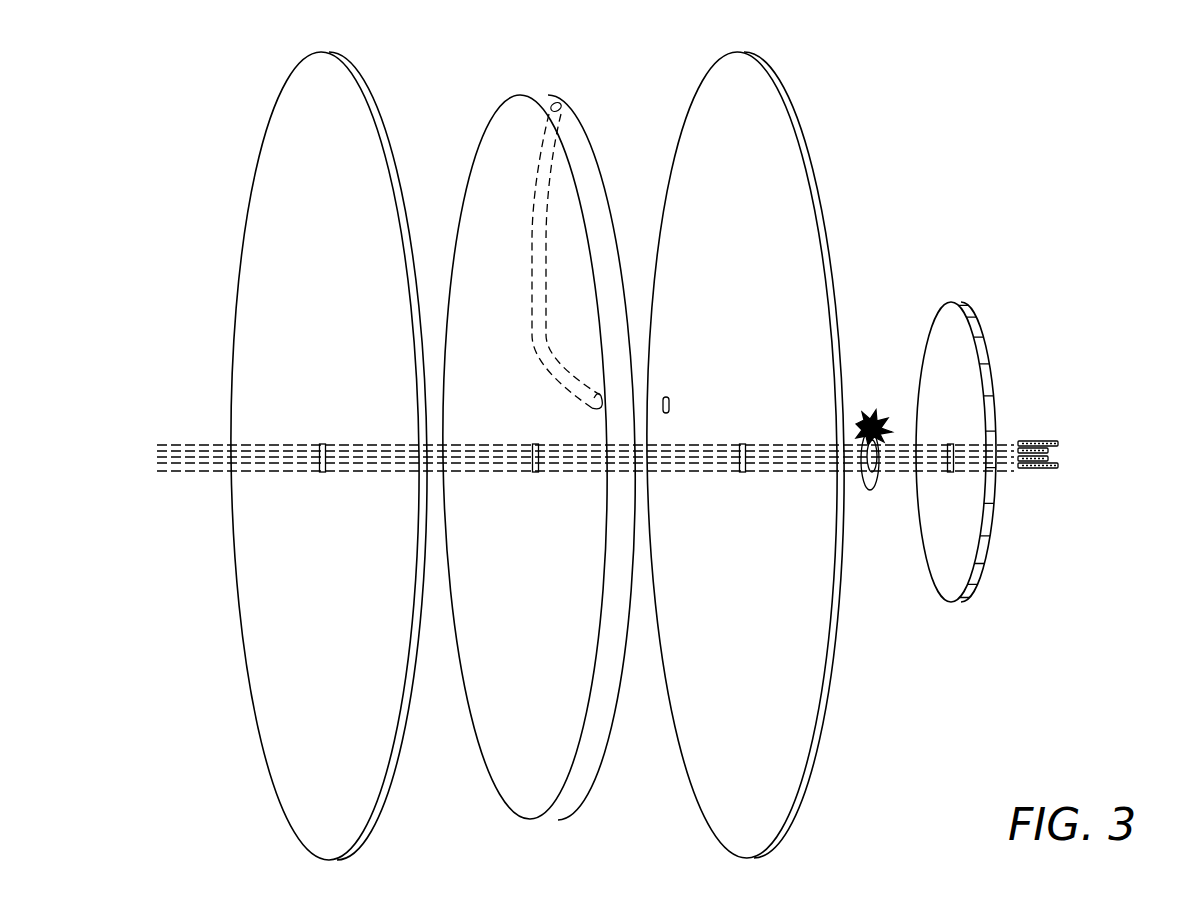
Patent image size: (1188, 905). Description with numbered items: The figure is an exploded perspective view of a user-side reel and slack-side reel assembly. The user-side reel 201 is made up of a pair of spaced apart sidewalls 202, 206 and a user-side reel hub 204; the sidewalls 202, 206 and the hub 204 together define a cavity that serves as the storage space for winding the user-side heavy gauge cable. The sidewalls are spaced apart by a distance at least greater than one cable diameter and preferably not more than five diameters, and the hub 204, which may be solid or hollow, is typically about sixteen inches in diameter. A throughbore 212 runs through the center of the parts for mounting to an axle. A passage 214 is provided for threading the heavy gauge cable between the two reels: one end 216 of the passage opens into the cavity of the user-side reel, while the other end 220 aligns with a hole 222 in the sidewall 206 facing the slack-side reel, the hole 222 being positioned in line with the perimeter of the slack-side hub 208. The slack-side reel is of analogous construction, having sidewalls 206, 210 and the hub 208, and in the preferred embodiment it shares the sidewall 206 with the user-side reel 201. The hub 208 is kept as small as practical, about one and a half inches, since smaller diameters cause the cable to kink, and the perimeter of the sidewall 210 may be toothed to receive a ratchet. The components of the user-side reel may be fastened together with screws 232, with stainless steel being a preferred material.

The user-side reel 201 is at (547, 64).
The sidewall 202 is at (322, 54).
The user-side reel hub 204 is at (518, 97).
The sidewall 206 is at (748, 53).
The hub 208 is at (871, 424).
The sidewall 210 is at (996, 312).
The throughbore 212 is at (323, 472).
The passage 214 is at (503, 225).
The end of the passage 216 is at (560, 104).
The other end of the passage 220 is at (598, 412).
The hole 222 is at (672, 400).
The screws 232 is at (1078, 457).